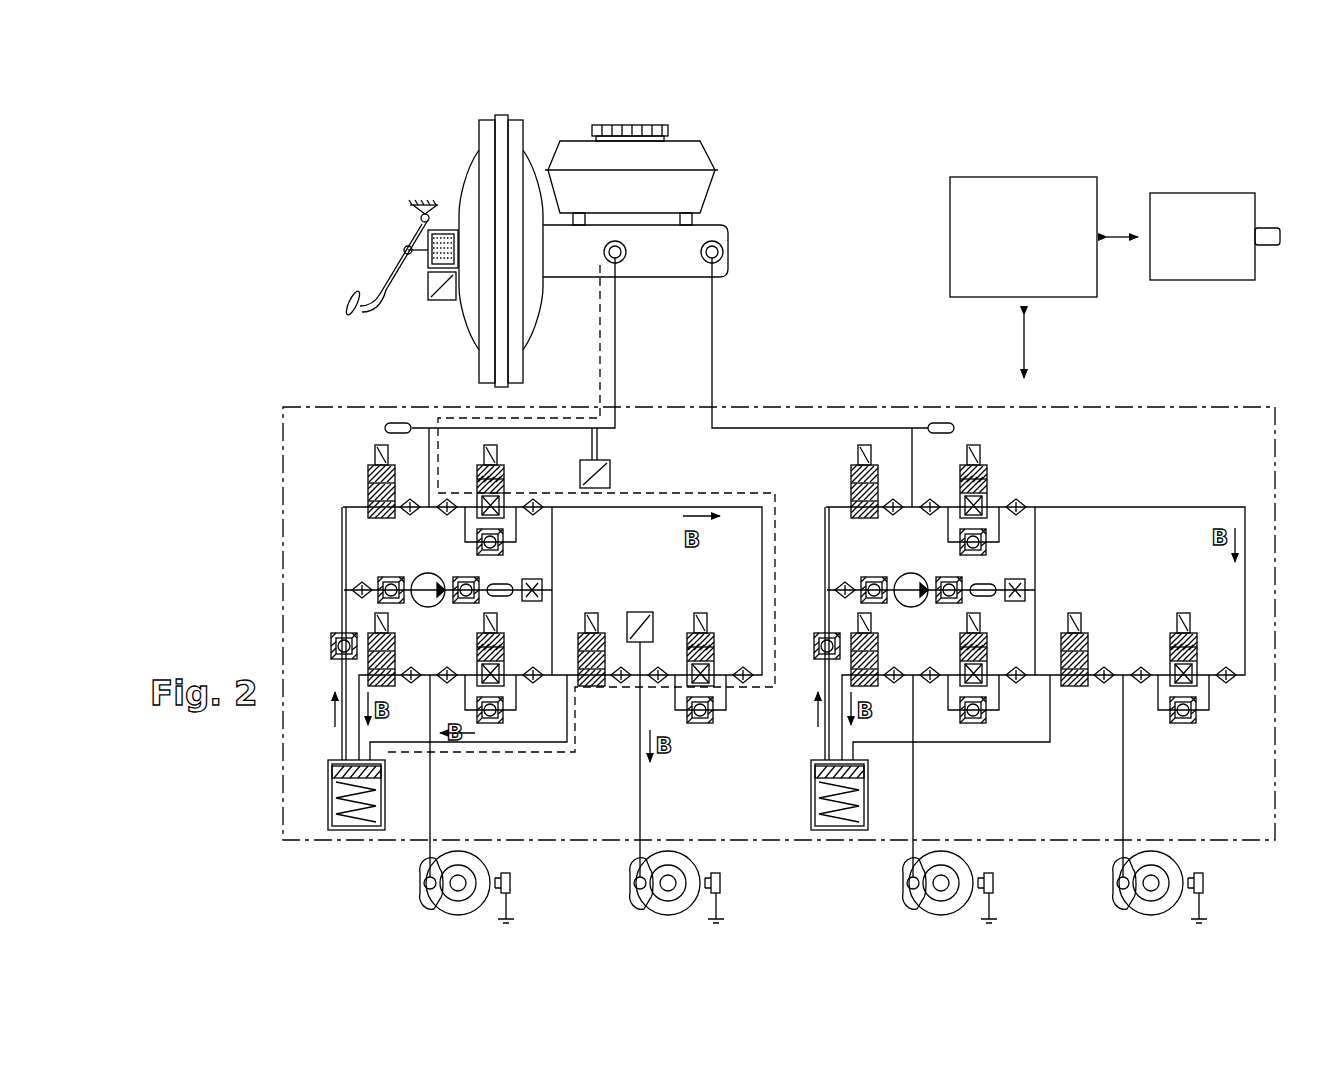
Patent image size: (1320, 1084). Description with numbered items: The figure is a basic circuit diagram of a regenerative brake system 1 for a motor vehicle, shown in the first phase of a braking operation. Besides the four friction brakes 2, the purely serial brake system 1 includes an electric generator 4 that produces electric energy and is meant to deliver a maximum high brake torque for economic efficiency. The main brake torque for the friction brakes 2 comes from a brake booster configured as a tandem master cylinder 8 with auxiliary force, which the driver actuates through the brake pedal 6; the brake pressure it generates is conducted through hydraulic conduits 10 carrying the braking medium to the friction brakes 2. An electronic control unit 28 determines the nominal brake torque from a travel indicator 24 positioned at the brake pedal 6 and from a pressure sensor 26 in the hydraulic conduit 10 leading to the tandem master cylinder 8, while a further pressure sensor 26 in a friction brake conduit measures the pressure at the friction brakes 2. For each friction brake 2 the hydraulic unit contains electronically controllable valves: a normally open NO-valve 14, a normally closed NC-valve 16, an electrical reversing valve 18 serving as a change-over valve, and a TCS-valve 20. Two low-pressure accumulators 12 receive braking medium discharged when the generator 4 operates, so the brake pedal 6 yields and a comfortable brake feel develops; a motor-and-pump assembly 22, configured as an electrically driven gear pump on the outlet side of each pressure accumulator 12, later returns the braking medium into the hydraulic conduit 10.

The brake system 1 is at (272, 293).
The friction brake 2 is at (425, 902).
The electric generator 4 is at (1208, 282).
The brake pedal 6 is at (370, 310).
The tandem master cylinder 8 is at (487, 163).
The hydraulic conduit 10 is at (620, 325).
The pressure accumulator 12 is at (335, 828).
The NO-valve 14 is at (503, 660).
The NC-valve 16 is at (395, 663).
The ERV-valve 18 is at (368, 492).
The TCS-valve 20 is at (504, 492).
The motor-and-pump assembly 22 is at (428, 590).
The travel indicator 24 is at (444, 300).
The pressure sensor 26 is at (610, 470).
The electronic control unit 28 is at (978, 300).